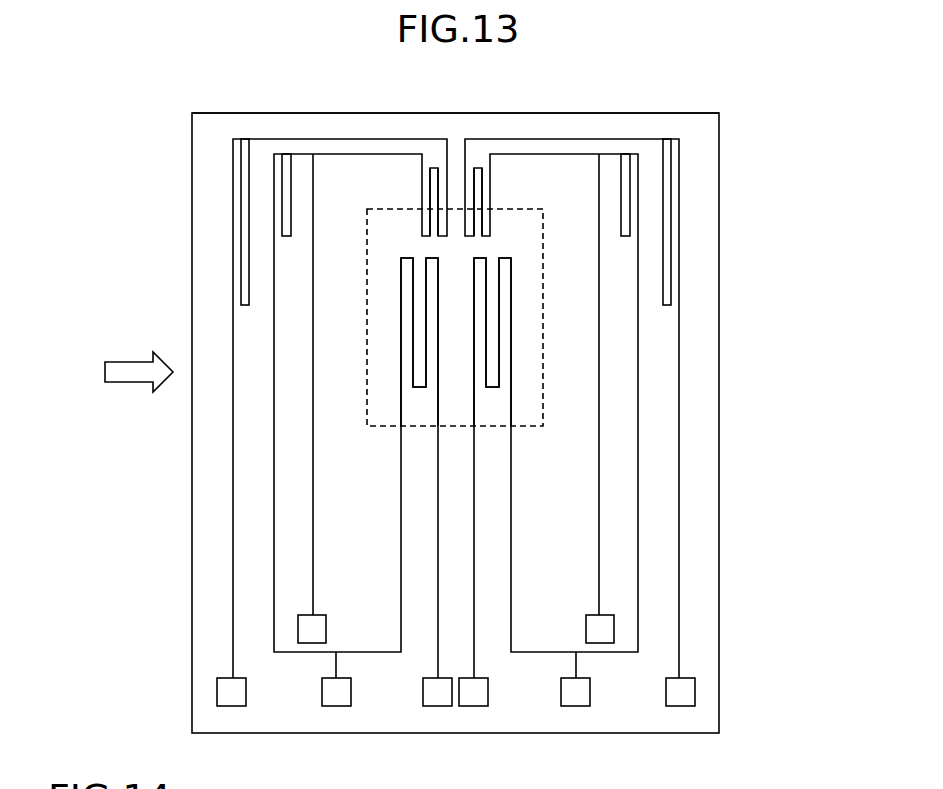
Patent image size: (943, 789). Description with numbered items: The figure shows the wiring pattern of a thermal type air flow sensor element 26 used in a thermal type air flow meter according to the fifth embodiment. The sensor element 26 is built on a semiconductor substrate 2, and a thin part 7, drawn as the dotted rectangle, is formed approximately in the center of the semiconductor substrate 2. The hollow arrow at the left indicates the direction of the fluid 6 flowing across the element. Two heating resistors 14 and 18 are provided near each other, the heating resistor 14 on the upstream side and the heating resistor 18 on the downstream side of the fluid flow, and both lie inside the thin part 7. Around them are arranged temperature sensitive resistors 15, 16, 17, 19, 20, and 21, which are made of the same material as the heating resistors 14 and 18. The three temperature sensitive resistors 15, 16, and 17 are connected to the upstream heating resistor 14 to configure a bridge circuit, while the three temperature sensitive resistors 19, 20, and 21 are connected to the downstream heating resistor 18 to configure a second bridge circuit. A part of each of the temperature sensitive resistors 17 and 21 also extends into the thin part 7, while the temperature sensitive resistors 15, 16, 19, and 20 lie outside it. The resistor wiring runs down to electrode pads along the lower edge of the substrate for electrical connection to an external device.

The semiconductor substrate 2 is at (710, 137).
The thermal type air flow sensor element 26 is at (663, 112).
The fluid 6 is at (128, 383).
The thin part 7 is at (543, 382).
The heating resistor 14 is at (402, 317).
The temperature sensitive resistor 15 is at (273, 217).
The temperature sensitive resistor 16 is at (233, 175).
The temperature sensitive resistor 17 is at (424, 174).
The heating resistor 18 is at (511, 318).
The temperature sensitive resistor 19 is at (637, 216).
The temperature sensitive resistor 20 is at (678, 178).
The temperature sensitive resistor 21 is at (488, 174).